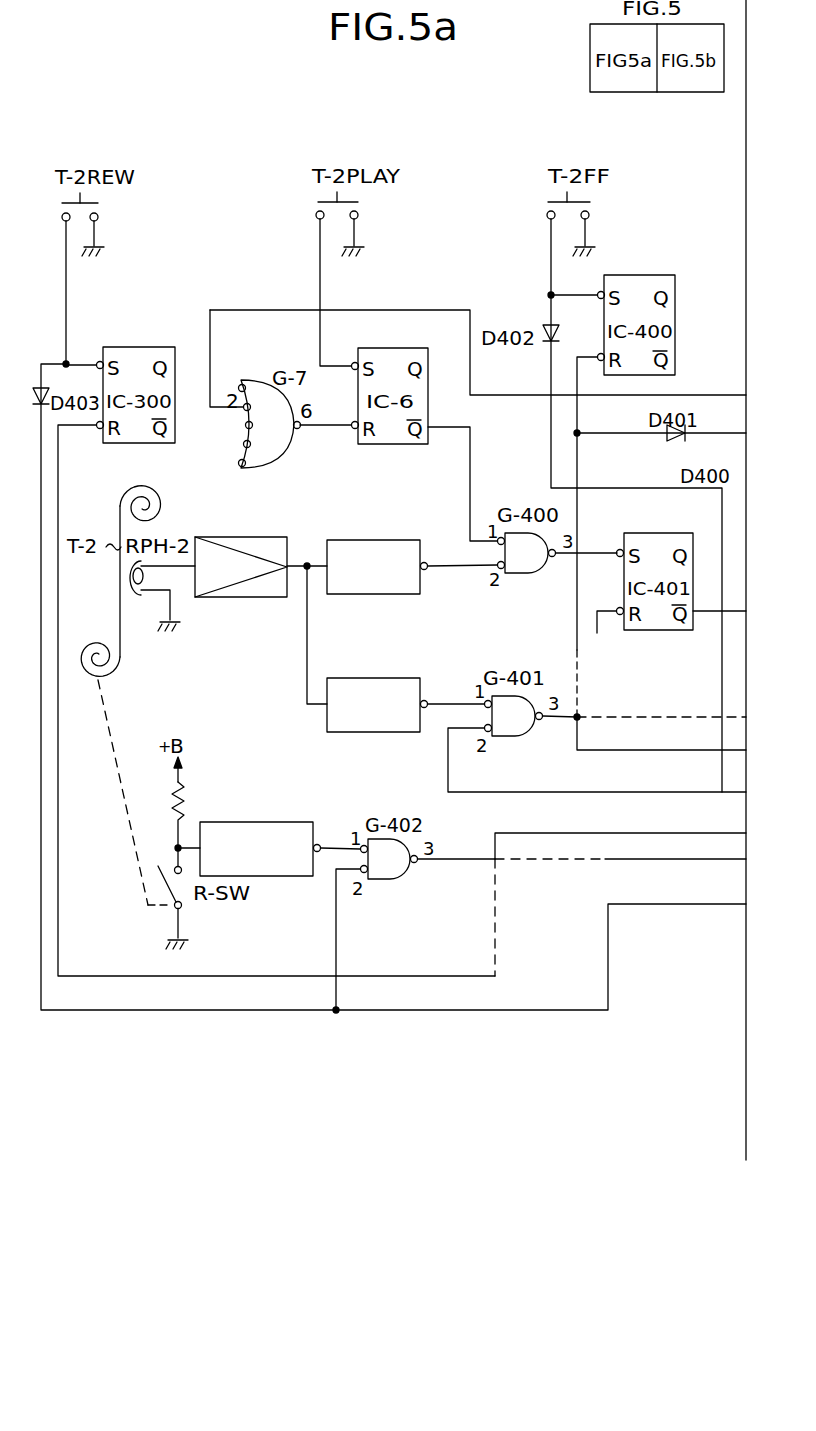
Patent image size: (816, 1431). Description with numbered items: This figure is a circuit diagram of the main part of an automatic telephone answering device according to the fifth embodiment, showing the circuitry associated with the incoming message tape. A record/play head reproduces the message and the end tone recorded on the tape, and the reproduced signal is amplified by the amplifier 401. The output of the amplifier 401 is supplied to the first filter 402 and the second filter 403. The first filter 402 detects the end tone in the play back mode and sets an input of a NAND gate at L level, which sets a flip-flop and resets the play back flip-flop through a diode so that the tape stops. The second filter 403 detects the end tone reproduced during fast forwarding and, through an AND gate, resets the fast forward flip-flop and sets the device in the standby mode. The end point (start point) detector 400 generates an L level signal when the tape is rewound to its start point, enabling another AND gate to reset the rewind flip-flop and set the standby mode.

The end point (start point) detector 400 is at (263, 822).
The amplifier 401 is at (247, 537).
The first filter 402 is at (374, 540).
The second filter 403 is at (379, 685).